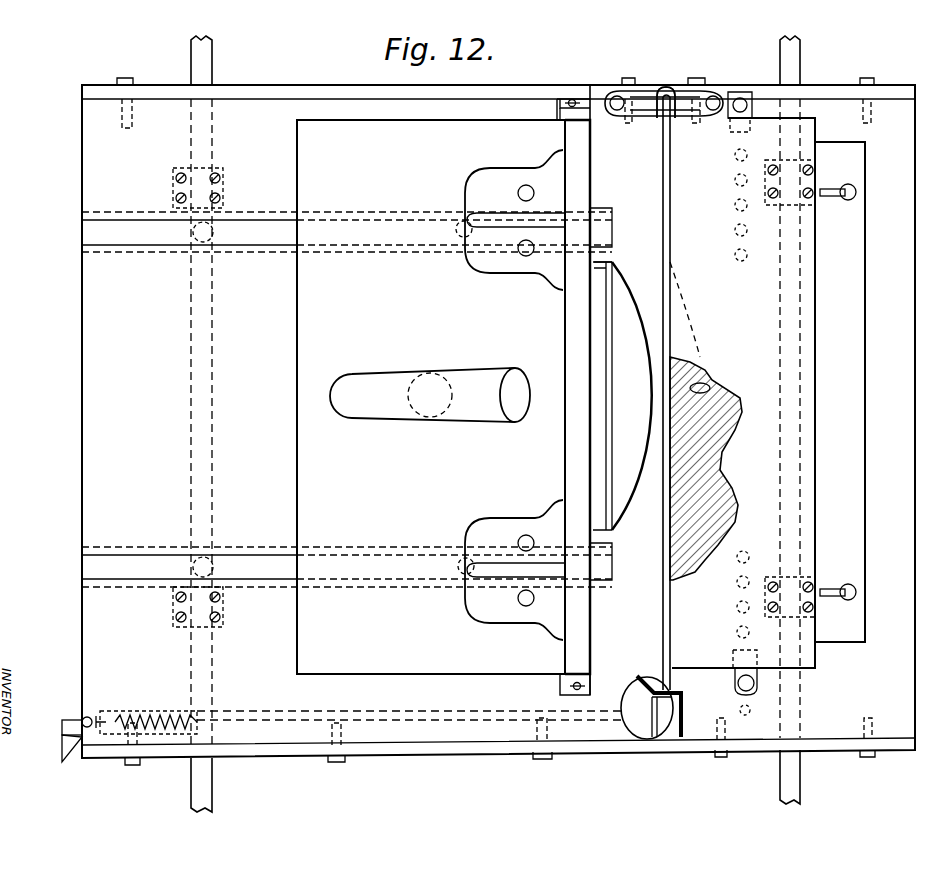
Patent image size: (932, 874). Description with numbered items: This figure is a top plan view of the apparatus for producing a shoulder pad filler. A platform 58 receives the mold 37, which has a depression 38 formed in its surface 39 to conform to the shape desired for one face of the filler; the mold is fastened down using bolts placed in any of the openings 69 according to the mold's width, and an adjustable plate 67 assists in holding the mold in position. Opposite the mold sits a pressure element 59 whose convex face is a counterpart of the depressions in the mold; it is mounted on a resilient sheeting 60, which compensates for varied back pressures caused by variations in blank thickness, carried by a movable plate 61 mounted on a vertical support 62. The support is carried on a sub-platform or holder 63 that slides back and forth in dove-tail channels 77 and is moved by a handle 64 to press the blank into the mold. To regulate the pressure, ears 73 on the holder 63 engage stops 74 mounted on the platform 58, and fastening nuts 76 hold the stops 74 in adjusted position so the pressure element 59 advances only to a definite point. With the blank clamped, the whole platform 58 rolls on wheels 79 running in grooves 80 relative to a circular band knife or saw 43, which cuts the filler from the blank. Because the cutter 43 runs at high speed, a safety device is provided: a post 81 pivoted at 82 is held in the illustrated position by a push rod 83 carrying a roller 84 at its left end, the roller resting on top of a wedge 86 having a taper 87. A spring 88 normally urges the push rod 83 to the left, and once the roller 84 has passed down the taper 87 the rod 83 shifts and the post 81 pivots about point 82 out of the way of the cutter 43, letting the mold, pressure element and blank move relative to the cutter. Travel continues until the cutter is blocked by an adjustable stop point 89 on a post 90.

The mold 37 is at (805, 551).
The depression 38 is at (720, 382).
The surface 39 is at (672, 248).
The circular band knife or saw 43 is at (675, 723).
The platform 58 is at (108, 396).
The pressure element 59 is at (622, 330).
The resilient sheeting 60 is at (605, 292).
The movable plate 61 is at (602, 453).
The vertical support 62 is at (570, 433).
The sub-platform or holder 63 is at (400, 485).
The handle 64 is at (387, 378).
The plate 67 is at (857, 455).
The openings 69 is at (735, 180).
The ears 73 is at (548, 115).
The stops 74 is at (592, 95).
The fastening nuts 76 is at (572, 99).
The channels 77 is at (272, 242).
The wheels 79 is at (210, 175).
The grooves 80 is at (213, 63).
The post 81 is at (660, 732).
The pivot 82 is at (640, 730).
The push rod 83 is at (405, 712).
The roller 84 is at (92, 715).
The wedge 86 is at (62, 722).
The taper 87 is at (75, 752).
The spring 88 is at (168, 712).
The stop point 89 is at (662, 88).
The post 90 is at (685, 92).